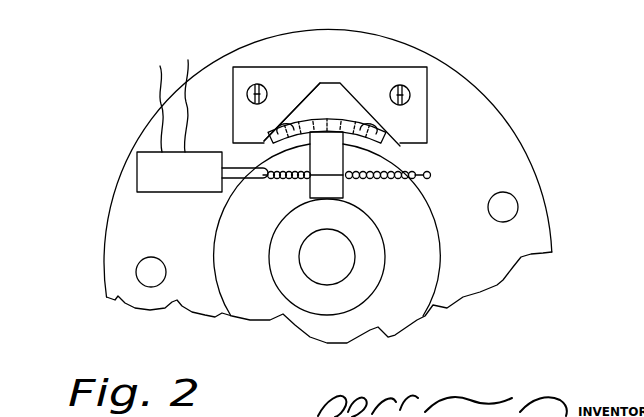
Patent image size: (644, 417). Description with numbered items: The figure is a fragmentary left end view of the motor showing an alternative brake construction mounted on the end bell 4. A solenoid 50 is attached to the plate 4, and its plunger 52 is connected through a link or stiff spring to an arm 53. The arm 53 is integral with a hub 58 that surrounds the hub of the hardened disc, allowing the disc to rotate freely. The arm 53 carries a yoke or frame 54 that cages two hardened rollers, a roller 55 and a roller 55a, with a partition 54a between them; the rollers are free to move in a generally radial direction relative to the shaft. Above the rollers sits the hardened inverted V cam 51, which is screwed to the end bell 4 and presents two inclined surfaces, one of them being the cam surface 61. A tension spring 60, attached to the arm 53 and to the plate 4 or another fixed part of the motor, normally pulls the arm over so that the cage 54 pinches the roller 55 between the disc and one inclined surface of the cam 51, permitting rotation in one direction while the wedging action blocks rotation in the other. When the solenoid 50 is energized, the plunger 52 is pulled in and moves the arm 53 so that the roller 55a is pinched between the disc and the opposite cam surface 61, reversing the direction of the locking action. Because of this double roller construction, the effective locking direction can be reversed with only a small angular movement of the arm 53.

The end bell 4 is at (490, 133).
The solenoid 50 is at (188, 185).
The inverted V cam 51 is at (355, 67).
The plunger 52 is at (250, 180).
The arm 53 is at (333, 178).
The yoke 54 is at (345, 120).
The partition 54a is at (327, 119).
The hardened roller 55 is at (380, 121).
The roller 55a is at (287, 121).
The hub 58 is at (272, 238).
The tension spring 60 is at (373, 180).
The cam surface 61 is at (302, 102).